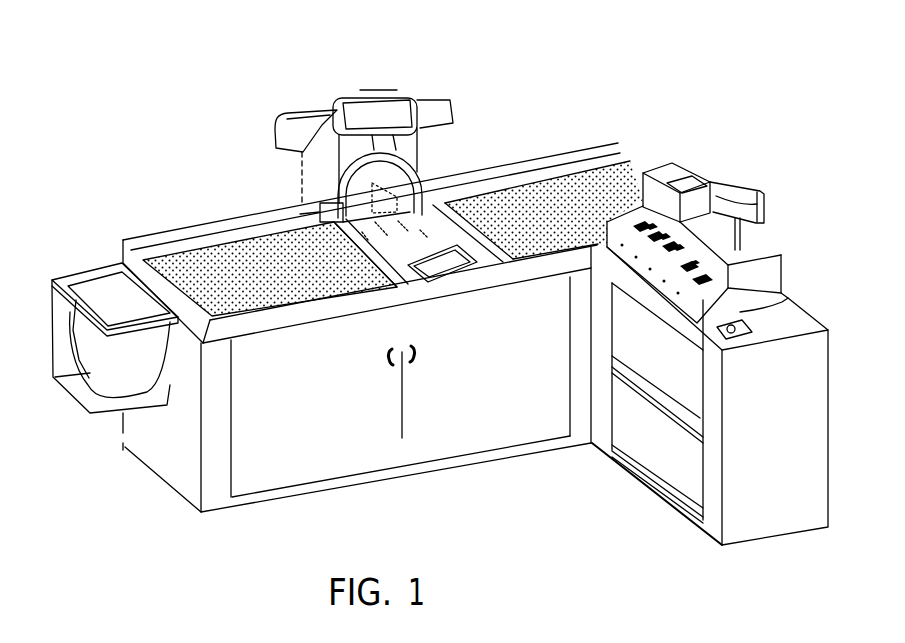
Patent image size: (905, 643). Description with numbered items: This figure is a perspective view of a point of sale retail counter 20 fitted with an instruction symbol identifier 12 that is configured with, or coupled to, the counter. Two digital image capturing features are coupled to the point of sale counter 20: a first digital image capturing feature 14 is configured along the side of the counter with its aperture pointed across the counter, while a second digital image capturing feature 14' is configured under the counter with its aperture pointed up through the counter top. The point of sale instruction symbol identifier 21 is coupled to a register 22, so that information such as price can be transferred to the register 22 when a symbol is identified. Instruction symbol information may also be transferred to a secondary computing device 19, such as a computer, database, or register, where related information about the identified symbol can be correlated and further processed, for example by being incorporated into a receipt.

The instruction symbol identifier 12 is at (233, 106).
The first digital image capturing feature 14 is at (316, 156).
The second digital image capturing feature 14' is at (476, 173).
The secondary computing device 19 is at (730, 212).
The point of sale counter 20 is at (218, 265).
The point of sale instruction symbol identifier 21 is at (405, 160).
The register 22 is at (681, 197).